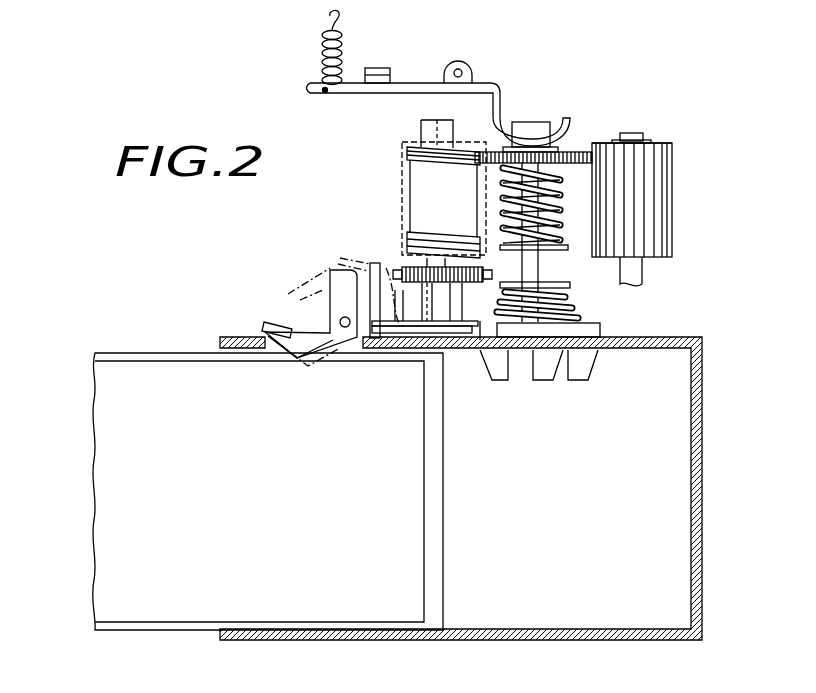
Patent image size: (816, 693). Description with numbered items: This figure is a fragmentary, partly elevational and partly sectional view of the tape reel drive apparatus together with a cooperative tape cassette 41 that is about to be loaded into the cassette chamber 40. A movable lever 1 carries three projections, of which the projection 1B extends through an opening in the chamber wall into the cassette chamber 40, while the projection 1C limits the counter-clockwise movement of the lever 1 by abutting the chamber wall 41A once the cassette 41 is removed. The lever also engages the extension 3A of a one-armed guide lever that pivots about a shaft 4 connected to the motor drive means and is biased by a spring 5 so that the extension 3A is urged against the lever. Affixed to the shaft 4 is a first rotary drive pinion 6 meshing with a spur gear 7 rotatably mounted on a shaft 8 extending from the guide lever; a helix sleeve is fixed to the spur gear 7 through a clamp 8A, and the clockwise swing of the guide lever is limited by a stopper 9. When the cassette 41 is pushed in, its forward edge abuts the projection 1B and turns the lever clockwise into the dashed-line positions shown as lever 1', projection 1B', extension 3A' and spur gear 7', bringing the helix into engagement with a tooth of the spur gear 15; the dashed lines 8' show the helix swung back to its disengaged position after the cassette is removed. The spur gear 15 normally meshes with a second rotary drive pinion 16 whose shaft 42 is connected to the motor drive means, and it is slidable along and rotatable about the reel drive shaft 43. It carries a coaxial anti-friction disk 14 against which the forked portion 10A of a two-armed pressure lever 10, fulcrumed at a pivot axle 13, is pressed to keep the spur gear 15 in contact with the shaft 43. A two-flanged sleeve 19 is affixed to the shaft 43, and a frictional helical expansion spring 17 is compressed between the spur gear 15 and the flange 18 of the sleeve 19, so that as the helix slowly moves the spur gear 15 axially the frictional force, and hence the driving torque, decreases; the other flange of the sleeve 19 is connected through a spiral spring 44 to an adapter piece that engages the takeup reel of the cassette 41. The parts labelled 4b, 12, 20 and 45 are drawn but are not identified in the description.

The lever 1 is at (311, 304).
The lever in dashed-line position 1' is at (340, 297).
The projection 1B is at (291, 372).
The projection in dashed-line position 1B' is at (309, 375).
The projection 1C is at (272, 323).
The extension of guide lever 3A is at (360, 281).
The extension in dashed-line position 3A' is at (335, 252).
The shaft 4 is at (433, 330).
The tension spring 4b is at (342, 42).
The spring 5 is at (483, 353).
The first rotary drive pinion 6 is at (397, 268).
The spur gear 7 is at (426, 364).
The spur gear in dashed-line position 7' is at (412, 367).
The shaft 8 is at (417, 256).
The helix in dashed-line position 8' is at (420, 198).
The clamp 8A is at (473, 255).
The stopper 9 is at (525, 358).
The pressure lever 10 is at (372, 88).
The forked portion 10A is at (560, 125).
The block 12 is at (377, 68).
The pivot axle 13 is at (462, 62).
The anti-friction disk 14 is at (578, 152).
The spur gear 15 is at (629, 120).
The second rotary drive pinion 16 is at (662, 213).
The frictional helical expansion spring 17 is at (558, 203).
The flange 18 is at (558, 248).
The two-flanged sleeve 19 is at (570, 283).
The mounting tab 20 is at (583, 365).
The cassette chamber 40 is at (547, 640).
The tape cassette 41 is at (224, 551).
The chamber wall 41A is at (263, 337).
The shaft 42 is at (632, 132).
The reel drive shaft 43 is at (527, 127).
The spiral spring 44 is at (577, 322).
The cylinder rim 45 is at (650, 142).